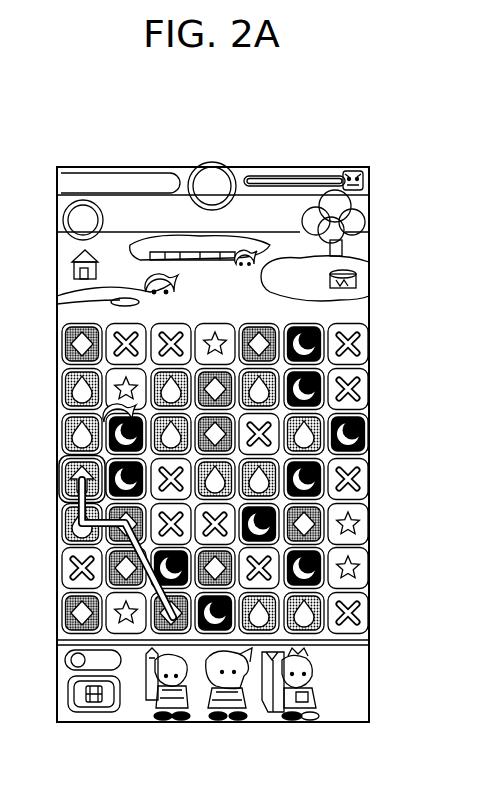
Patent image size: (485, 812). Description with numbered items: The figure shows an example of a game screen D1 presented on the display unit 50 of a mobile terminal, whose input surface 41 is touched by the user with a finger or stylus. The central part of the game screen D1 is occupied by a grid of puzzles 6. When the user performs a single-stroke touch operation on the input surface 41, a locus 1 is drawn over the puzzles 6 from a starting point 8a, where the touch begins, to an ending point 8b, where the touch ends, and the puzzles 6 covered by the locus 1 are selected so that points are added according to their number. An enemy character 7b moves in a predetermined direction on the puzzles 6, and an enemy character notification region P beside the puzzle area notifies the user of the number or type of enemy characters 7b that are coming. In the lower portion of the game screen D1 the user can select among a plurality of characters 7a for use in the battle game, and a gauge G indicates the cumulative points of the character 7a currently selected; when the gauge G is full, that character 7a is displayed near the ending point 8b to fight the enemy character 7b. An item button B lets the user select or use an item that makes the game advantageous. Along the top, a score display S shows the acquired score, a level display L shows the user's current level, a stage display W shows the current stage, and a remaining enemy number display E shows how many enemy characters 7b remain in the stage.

The input surface 41 is at (212, 431).
The display unit 50 is at (152, 160).
The score display S is at (104, 185).
The stage display W is at (212, 165).
The game screen D1 is at (273, 175).
The remaining enemy number display E is at (343, 176).
The level display L is at (59, 238).
The enemy character notification region P is at (378, 197).
The puzzles 6 is at (362, 335).
The enemy character 7b is at (100, 405).
The ending point 8b is at (62, 470).
The starting point 8a is at (165, 614).
The locus 1 is at (80, 522).
The item button B is at (68, 700).
The gauge G is at (140, 716).
The character 7a is at (305, 728).